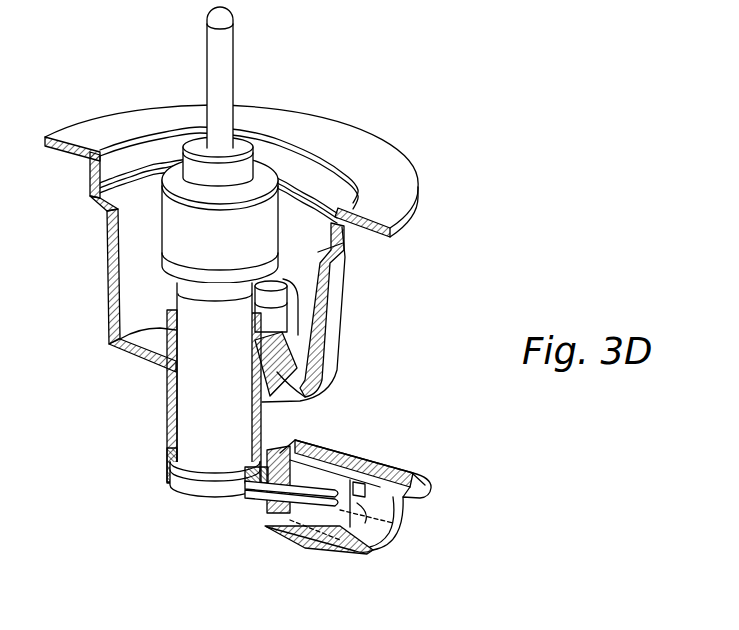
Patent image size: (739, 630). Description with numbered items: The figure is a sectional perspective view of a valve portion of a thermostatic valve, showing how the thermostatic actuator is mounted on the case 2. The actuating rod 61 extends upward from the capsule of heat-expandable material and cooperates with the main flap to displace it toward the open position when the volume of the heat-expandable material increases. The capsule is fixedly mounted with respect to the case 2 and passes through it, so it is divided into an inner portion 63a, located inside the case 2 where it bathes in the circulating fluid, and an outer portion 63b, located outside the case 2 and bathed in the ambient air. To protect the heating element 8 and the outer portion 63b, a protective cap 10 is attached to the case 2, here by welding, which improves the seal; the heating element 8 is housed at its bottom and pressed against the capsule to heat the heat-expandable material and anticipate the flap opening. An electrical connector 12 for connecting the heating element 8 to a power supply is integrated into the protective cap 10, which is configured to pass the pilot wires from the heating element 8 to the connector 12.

The case 2 is at (343, 317).
The actuating rod 61 is at (222, 57).
The inner portion 63a is at (198, 247).
The outer portion 63b is at (197, 415).
The protective cap 10 is at (267, 413).
The electrical connector 12 is at (370, 467).
The heating element 8 is at (207, 486).